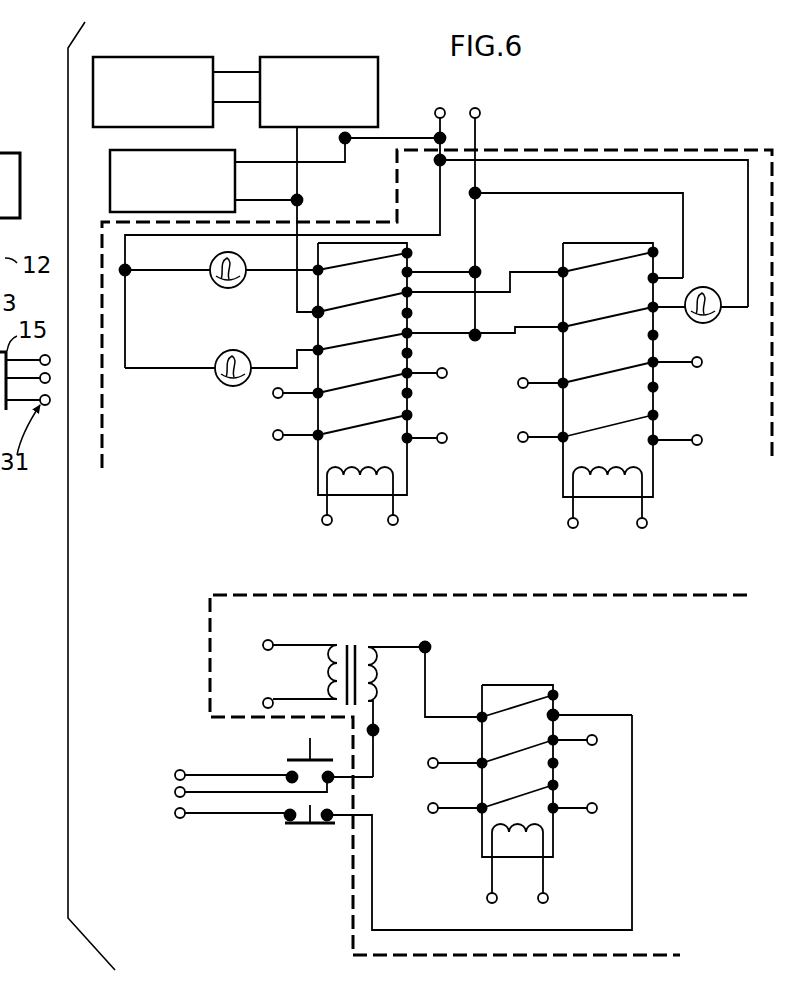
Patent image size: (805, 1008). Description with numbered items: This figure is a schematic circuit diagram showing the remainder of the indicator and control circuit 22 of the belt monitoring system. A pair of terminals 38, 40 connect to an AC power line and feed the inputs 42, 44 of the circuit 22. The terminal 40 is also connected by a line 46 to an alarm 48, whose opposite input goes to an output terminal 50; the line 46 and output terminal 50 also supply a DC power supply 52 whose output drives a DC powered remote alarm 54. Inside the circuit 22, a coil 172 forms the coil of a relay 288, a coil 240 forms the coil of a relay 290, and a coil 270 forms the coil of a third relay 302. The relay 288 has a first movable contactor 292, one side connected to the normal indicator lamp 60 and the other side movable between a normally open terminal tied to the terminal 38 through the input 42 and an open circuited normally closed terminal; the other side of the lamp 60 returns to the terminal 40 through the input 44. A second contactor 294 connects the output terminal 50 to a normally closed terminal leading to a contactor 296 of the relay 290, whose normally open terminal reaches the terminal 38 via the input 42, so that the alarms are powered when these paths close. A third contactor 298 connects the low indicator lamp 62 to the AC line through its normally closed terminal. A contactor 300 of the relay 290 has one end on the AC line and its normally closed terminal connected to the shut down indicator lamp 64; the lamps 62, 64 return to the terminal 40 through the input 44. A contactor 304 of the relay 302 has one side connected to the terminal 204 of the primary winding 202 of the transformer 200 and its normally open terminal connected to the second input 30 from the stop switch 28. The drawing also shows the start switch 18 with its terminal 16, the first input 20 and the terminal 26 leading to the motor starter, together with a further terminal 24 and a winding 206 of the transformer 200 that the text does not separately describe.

The alarm 54 is at (153, 56).
The DC power supply 52 is at (266, 56).
The alarm 48 is at (114, 149).
The line 46 is at (350, 140).
The terminal 40 is at (440, 107).
The terminal 38 is at (475, 107).
The input 44 is at (440, 160).
The input 42 is at (478, 195).
The indicator and control circuit 22 is at (661, 140).
The normal indicator lamp 60 is at (214, 280).
The low indicator lamp 62 is at (218, 356).
The output terminal 50 is at (316, 312).
The first movable contactor 292 is at (390, 258).
The second movable contactor 294 is at (388, 298).
The third movable contactor 298 is at (382, 343).
The relay 288 is at (316, 455).
The coil 172 is at (396, 510).
The contactor 296 is at (640, 262).
The movable contactor 300 is at (638, 318).
The relay 290 is at (658, 450).
The coil 240 is at (648, 505).
The shut down indicator lamp 64 is at (704, 287).
The transformer 200 is at (355, 607).
The transformer primary winding 206 is at (330, 672).
The primary winding 202 is at (378, 667).
The terminal 204 is at (430, 645).
The first input 20 is at (378, 730).
The start switch 18 is at (290, 750).
The terminal 16 is at (175, 775).
The terminal 26 is at (175, 792).
The terminal 24 is at (175, 813).
The stop switch 28 is at (310, 830).
The second input 30 is at (556, 713).
The movable contactor 304 is at (540, 700).
The relay 302 is at (556, 830).
The coil 270 is at (548, 900).